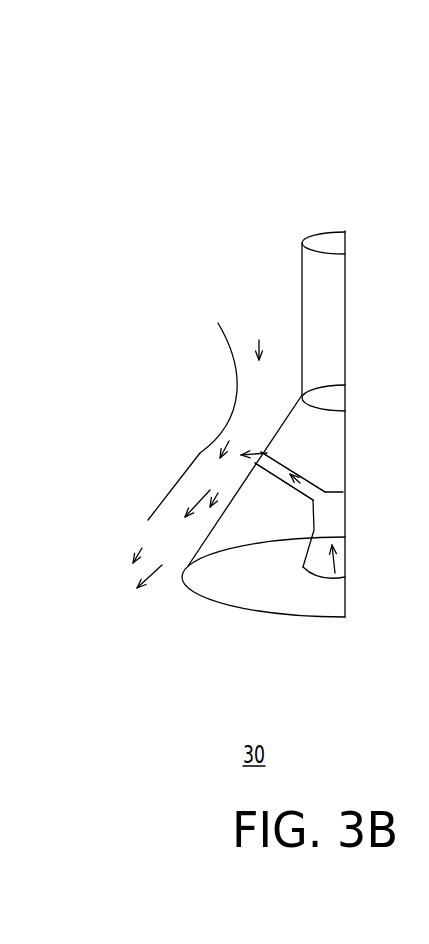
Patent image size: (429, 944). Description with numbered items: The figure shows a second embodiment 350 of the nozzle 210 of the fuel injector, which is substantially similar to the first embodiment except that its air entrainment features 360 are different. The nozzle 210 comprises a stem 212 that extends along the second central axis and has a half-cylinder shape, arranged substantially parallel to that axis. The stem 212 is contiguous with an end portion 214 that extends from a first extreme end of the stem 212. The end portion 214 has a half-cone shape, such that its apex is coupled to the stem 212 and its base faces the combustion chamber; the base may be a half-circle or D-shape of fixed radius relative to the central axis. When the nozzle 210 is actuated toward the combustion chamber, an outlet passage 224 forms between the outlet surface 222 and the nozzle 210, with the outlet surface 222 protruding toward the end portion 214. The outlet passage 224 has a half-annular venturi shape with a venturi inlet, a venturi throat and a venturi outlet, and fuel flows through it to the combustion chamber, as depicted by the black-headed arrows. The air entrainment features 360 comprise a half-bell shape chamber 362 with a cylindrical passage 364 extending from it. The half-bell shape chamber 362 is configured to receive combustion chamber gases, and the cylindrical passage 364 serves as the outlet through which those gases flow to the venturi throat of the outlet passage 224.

The second embodiment 350 is at (347, 74).
The stem 212 is at (302, 243).
The nozzle 210 is at (262, 322).
The outlet surface 222 is at (208, 457).
The outlet passage 224 is at (104, 568).
The end portion 214 is at (197, 594).
The air entrainment features 360 is at (300, 455).
The cylindrical passage 364 is at (292, 489).
The half-bell shape chamber 362 is at (343, 492).